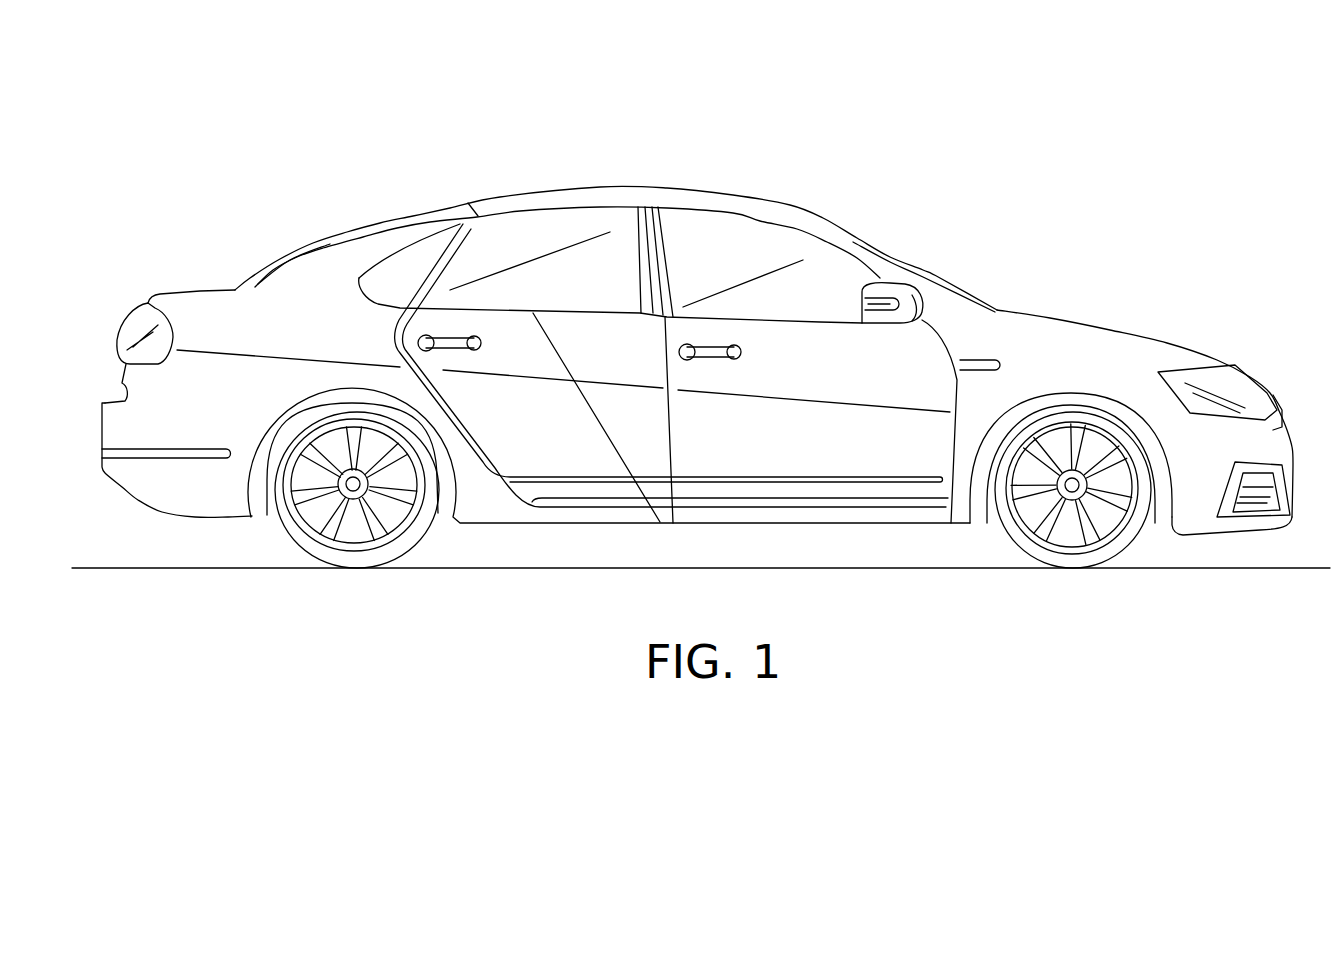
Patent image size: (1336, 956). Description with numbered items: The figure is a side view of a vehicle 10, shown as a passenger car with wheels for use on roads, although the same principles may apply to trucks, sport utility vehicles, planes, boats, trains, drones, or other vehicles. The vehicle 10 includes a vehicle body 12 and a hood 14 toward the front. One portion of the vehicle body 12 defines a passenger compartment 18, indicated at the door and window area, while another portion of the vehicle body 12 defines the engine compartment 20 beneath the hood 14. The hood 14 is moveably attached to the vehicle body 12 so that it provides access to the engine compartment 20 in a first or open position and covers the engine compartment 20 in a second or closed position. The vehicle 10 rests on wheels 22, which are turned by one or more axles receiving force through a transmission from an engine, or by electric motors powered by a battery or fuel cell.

The vehicle 10 is at (142, 97).
The vehicle body 12 is at (814, 363).
The hood 14 is at (1093, 328).
The passenger compartment 18 is at (733, 241).
The engine compartment 20 is at (1026, 334).
The wheels 22 is at (999, 472).